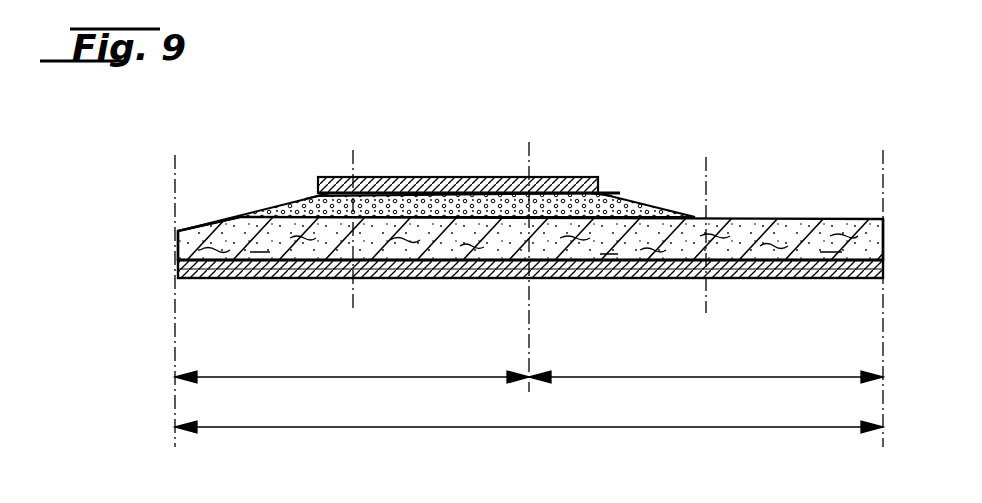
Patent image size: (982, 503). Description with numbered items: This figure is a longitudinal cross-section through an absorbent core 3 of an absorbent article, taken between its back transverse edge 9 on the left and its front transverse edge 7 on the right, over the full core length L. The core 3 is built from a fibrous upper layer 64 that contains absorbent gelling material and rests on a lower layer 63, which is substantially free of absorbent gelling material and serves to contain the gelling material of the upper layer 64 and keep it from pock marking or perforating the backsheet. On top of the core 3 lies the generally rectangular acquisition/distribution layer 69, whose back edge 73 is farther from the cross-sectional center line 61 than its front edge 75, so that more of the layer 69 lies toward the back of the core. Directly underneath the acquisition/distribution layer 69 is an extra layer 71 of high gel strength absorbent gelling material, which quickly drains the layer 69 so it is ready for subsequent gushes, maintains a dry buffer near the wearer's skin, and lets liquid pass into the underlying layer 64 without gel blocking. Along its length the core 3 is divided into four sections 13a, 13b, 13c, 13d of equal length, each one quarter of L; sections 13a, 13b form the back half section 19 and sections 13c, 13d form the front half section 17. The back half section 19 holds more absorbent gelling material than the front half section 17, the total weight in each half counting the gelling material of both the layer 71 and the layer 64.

The absorbent core 3 is at (357, 138).
The front transverse edge 7 is at (885, 237).
The back transverse edge 9 is at (176, 247).
The first section 13a is at (270, 260).
The second section 13b is at (448, 252).
The third section 13c is at (619, 252).
The fourth section 13d is at (810, 258).
The front half section 17 is at (698, 377).
The back half section 19 is at (365, 376).
The cross-sectional center line 61 is at (530, 152).
The lower layer 63 is at (744, 270).
The upper layer 64 is at (765, 232).
The acquisition/distribution layer 69 is at (468, 177).
The extra layer of absorbent gelling material 71 is at (302, 198).
The back edge 73 is at (310, 178).
The front edge 75 is at (606, 187).
The core length L is at (530, 428).